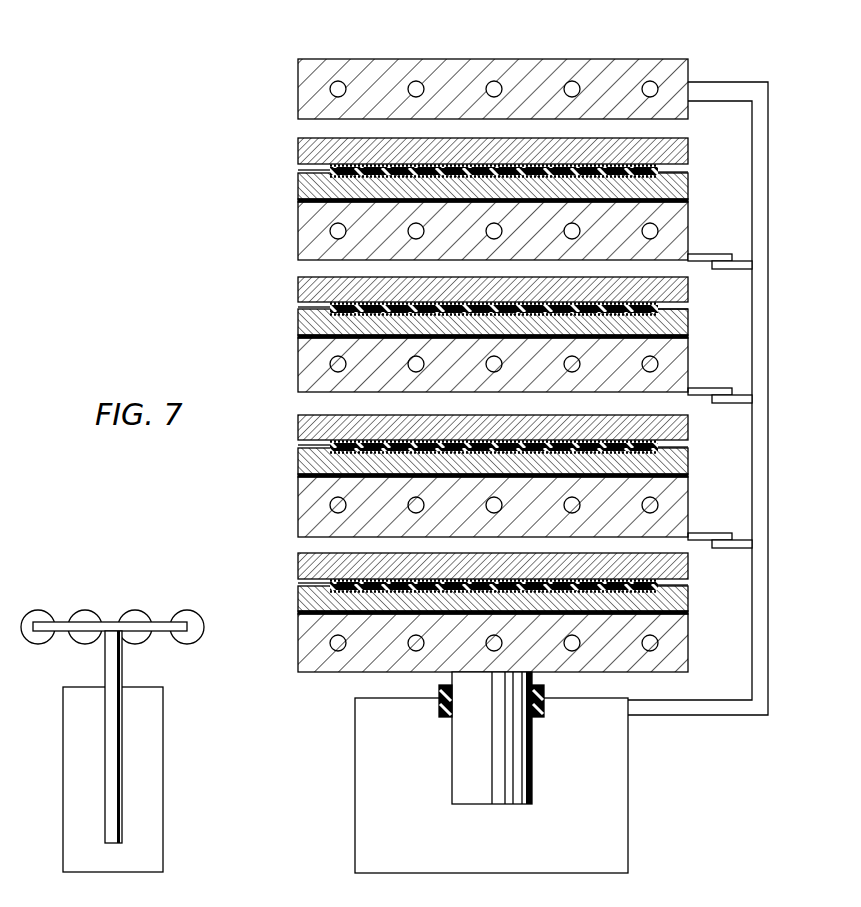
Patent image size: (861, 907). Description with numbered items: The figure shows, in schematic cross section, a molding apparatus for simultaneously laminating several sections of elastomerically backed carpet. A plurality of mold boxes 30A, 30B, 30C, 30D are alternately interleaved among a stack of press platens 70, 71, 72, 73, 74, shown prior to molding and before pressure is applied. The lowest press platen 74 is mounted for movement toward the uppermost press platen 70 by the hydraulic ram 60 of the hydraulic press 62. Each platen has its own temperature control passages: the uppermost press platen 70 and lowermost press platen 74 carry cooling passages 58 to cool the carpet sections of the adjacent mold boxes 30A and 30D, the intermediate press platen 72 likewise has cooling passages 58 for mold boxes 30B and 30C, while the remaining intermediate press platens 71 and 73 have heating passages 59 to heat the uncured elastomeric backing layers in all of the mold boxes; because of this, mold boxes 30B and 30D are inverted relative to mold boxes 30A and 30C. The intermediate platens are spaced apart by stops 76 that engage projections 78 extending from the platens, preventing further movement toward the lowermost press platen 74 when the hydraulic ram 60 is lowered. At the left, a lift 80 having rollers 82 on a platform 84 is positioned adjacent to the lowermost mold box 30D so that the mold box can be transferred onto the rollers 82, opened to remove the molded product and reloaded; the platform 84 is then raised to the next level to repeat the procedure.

The uppermost press platen 70 is at (298, 63).
The intermediate press platen 71 is at (298, 208).
The intermediate press platen 72 is at (298, 368).
The intermediate press platen 73 is at (298, 486).
The lowermost press platen 74 is at (298, 628).
The mold box 30A is at (298, 147).
The mold box 30B is at (298, 283).
The mold box 30C is at (298, 426).
The mold box 30D is at (298, 566).
The cooling passages 58 is at (496, 86).
The heating passages 59 is at (651, 232).
The stops 76 is at (752, 273).
The projections 78 is at (724, 255).
The hydraulic ram 60 is at (452, 760).
The hydraulic press 62 is at (628, 775).
The lift 80 is at (163, 727).
The rollers 82 is at (135, 612).
The platform 84 is at (60, 625).